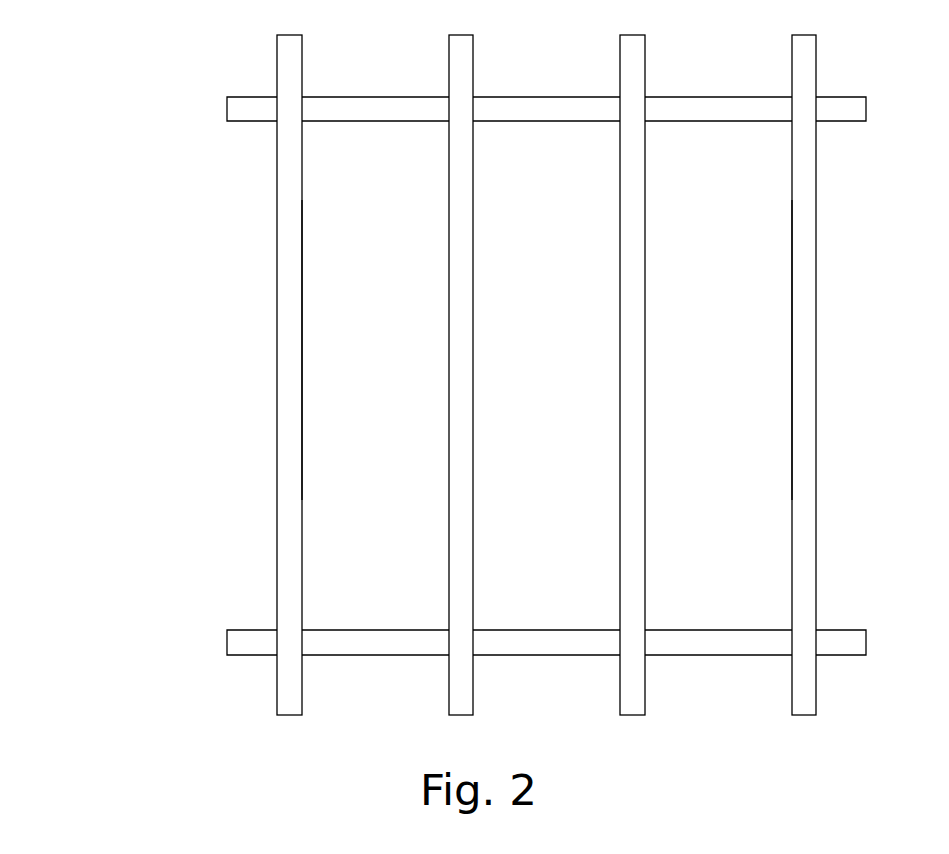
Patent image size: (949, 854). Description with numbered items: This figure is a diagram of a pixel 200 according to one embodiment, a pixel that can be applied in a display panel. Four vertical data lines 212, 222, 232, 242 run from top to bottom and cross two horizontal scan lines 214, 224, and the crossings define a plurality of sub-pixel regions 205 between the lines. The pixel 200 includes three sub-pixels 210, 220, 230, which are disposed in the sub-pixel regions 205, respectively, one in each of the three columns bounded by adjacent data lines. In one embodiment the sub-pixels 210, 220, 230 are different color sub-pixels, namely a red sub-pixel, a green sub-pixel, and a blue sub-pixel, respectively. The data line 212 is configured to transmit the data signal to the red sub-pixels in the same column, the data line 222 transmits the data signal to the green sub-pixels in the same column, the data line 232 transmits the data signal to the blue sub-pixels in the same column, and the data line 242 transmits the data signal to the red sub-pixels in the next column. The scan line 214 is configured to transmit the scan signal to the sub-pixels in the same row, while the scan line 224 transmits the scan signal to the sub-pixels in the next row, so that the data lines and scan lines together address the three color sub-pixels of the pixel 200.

The pixel 200 is at (118, 53).
The sub-pixel regions 205 is at (304, 342).
The sub-pixel 210 is at (395, 530).
The sub-pixel 220 is at (567, 530).
The sub-pixel 230 is at (739, 530).
The data line 212 is at (277, 60).
The data line 222 is at (473, 53).
The data line 232 is at (645, 53).
The data line 242 is at (816, 53).
The scan line 214 is at (247, 121).
The scan line 224 is at (247, 630).